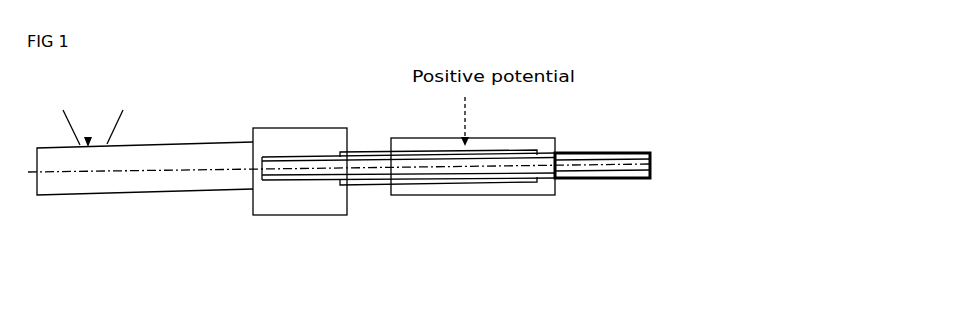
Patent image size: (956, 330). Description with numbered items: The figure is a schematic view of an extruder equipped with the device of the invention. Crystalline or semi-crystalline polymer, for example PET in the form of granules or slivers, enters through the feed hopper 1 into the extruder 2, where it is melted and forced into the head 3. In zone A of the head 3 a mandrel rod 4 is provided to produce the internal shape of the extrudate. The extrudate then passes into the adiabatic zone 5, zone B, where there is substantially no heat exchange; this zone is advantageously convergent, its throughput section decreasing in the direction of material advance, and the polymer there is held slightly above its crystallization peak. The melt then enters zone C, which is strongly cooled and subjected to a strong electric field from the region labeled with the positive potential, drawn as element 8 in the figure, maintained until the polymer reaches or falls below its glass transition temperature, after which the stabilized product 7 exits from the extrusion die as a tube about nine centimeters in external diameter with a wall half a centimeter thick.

The feed hopper 1 is at (88, 138).
The extruder 2 is at (168, 199).
The head 3 is at (263, 213).
The mandrel rod 4 is at (329, 153).
The adiabatic zone 5 is at (369, 185).
The stabilized product 7 is at (588, 188).
The positive potential electrode 8 is at (465, 195).